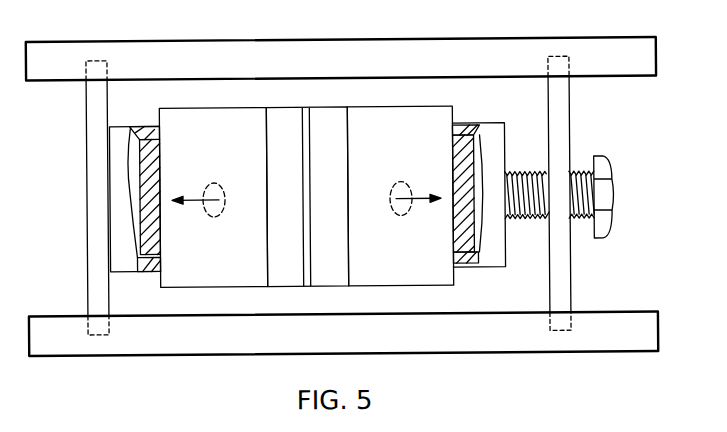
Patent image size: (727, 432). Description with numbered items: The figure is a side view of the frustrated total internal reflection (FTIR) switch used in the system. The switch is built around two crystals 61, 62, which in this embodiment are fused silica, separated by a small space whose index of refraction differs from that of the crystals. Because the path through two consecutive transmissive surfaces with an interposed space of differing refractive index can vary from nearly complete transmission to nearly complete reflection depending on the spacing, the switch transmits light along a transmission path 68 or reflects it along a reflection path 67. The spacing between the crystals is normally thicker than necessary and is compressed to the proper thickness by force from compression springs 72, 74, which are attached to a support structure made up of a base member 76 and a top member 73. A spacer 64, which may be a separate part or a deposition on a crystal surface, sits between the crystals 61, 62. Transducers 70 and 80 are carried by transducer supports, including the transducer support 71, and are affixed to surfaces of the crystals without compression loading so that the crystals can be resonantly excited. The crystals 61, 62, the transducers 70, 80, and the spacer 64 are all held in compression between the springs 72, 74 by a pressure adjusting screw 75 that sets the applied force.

The crystal 61 is at (406, 154).
The crystal 62 is at (228, 164).
The spacer 64 is at (312, 189).
The reflection path 67 is at (400, 206).
The transmission path 68 is at (216, 204).
The transducer 70 is at (150, 270).
The transducer support 71 is at (491, 254).
The compression spring 72 is at (115, 135).
The top member 73 is at (175, 39).
The compression spring 74 is at (558, 113).
The pressure adjusting screw 75 is at (603, 195).
The base member 76 is at (598, 329).
The transducer 80 is at (458, 128).